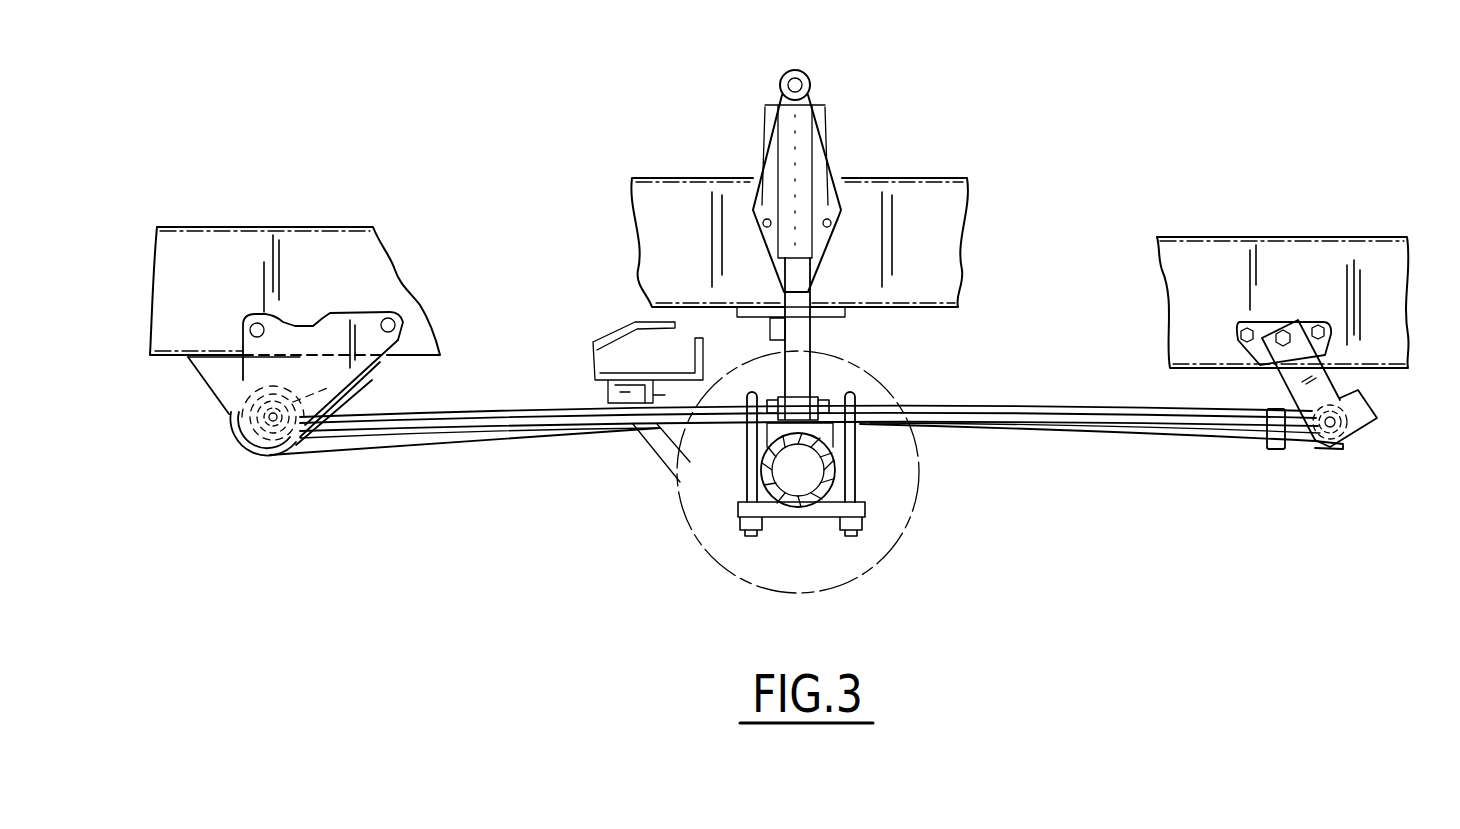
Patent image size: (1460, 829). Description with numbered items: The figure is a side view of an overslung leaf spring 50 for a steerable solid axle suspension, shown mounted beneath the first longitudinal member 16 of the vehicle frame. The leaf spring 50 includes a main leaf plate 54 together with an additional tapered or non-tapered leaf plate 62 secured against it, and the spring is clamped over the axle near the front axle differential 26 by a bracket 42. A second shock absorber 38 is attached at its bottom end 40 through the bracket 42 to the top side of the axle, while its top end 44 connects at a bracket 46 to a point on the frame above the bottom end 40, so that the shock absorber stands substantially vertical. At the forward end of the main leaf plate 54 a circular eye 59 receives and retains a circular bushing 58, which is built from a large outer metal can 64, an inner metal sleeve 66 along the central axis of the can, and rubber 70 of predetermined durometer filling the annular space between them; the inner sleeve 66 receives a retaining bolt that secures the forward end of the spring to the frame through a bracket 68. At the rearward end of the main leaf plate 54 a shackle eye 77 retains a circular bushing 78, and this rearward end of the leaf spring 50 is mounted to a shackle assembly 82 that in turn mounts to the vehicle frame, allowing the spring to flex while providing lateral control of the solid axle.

The first longitudinal member 16 is at (948, 186).
The front axle differential 26 is at (920, 514).
The second shock absorber 38 is at (806, 290).
The bottom end 40 is at (813, 400).
The bracket 42 is at (845, 405).
The top end 44 is at (818, 125).
The bracket 46 is at (812, 90).
The leaf spring 50 is at (806, 422).
The main leaf plate 54 is at (507, 407).
The bushing 58 is at (233, 437).
The circular eye 59 is at (372, 385).
The leaf plate 62 is at (520, 430).
The outer metal can 64 is at (264, 462).
The inner metal sleeve 66 is at (298, 458).
The bracket 68 is at (243, 347).
The rubber 70 is at (240, 455).
The shackle eye 77 is at (1365, 433).
The bushing 78 is at (1320, 438).
The shackle assembly 82 is at (1337, 385).